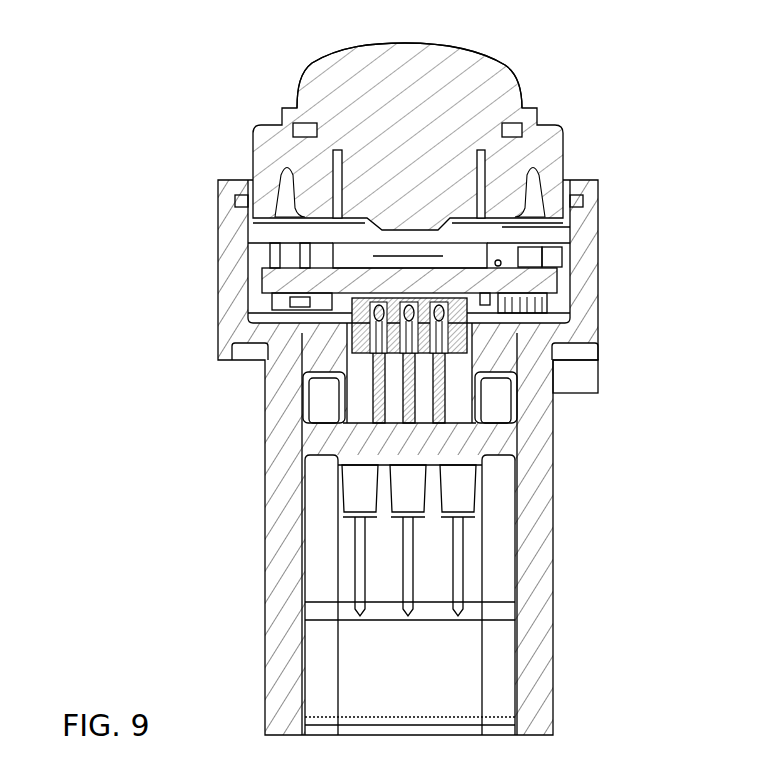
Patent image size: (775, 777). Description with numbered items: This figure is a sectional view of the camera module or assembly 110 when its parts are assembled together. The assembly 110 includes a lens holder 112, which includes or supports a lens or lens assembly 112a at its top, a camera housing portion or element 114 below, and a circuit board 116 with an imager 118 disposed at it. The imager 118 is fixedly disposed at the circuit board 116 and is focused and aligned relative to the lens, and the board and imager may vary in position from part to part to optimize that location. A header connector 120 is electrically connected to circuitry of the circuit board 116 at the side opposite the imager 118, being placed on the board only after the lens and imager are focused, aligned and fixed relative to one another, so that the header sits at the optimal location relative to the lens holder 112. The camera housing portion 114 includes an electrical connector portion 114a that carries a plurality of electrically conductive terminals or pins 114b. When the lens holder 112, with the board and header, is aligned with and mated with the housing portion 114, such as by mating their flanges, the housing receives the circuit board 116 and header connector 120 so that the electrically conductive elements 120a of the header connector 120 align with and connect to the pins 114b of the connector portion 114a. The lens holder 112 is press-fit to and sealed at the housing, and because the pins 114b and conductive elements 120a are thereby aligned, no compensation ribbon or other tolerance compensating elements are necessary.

The camera module or assembly 110 is at (160, 145).
The lens holder 112 is at (547, 150).
The lens or lens assembly 112a is at (417, 102).
The camera housing portion or element 114 is at (235, 308).
The electrical connector portion 114a is at (278, 532).
The electrically conductive terminals or pins 114b is at (438, 392).
The circuit board 116 is at (277, 282).
The imager 118 is at (362, 257).
The header connector 120 is at (357, 330).
The electrically conductive elements 120a is at (447, 313).